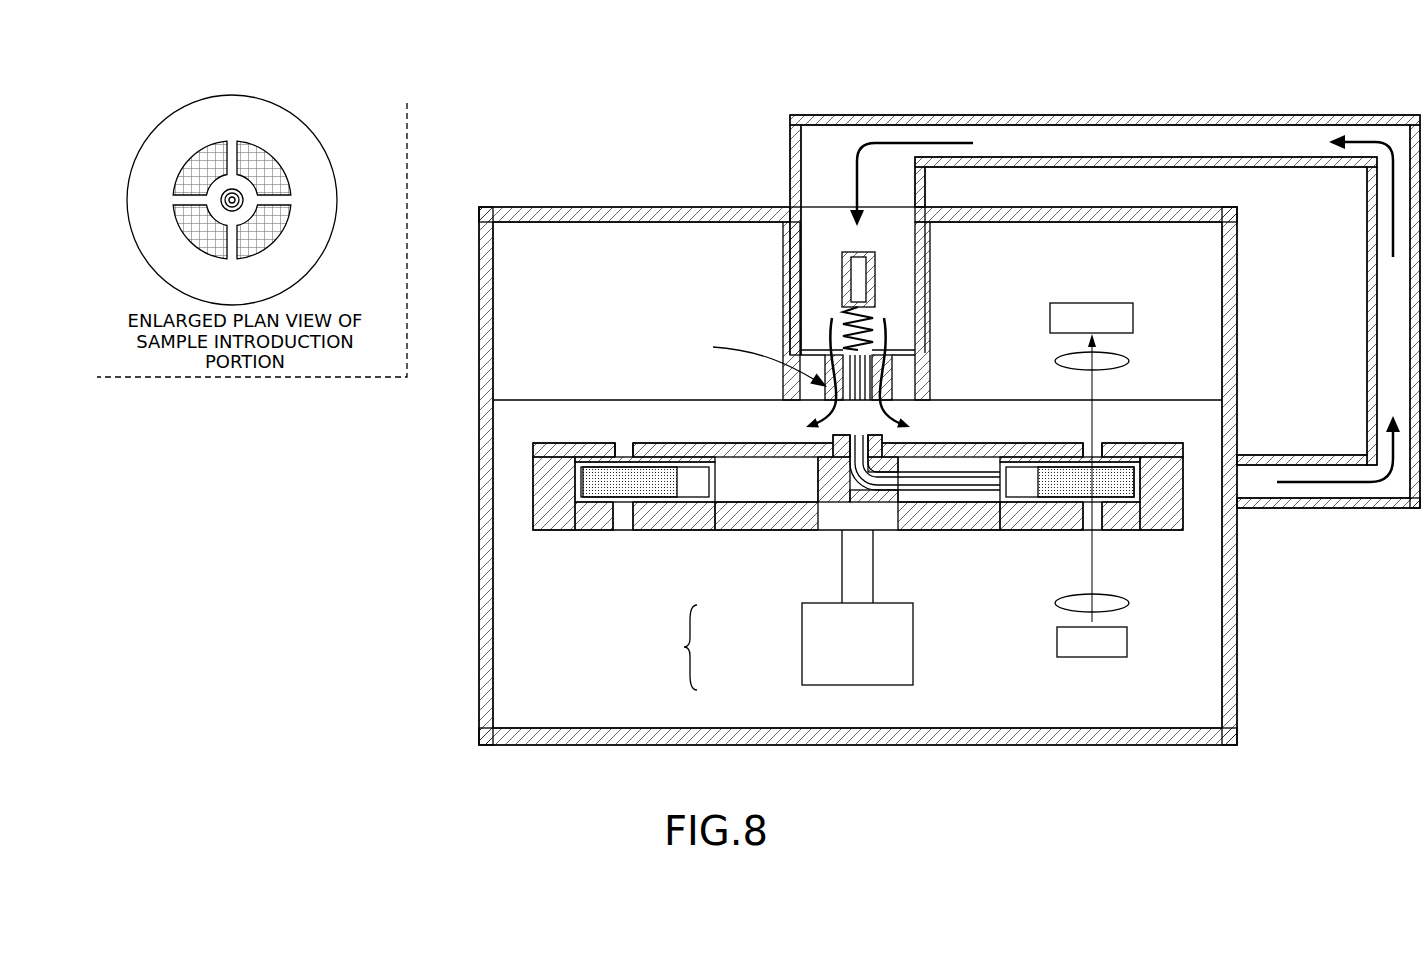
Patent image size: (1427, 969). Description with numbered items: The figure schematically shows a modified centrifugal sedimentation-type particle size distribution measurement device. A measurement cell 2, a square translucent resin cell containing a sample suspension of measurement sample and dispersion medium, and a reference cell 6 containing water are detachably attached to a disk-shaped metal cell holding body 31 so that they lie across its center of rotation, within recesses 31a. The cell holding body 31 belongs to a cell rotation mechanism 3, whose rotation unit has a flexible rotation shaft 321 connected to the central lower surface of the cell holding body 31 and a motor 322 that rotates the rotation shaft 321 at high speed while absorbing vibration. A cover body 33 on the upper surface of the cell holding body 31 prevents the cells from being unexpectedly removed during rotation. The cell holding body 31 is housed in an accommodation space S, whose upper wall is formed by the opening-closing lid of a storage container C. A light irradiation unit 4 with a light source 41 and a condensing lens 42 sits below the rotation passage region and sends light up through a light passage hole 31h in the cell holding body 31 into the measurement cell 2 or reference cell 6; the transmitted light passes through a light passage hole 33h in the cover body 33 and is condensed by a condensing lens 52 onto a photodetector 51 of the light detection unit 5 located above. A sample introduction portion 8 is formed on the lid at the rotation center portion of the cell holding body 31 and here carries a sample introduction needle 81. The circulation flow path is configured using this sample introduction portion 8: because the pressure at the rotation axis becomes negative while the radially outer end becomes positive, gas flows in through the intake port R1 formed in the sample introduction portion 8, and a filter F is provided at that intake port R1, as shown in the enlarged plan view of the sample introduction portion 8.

The storage container C is at (478, 562).
The accommodation space S is at (614, 275).
The sample introduction portion 8 is at (783, 254).
The sample introduction needle 81 is at (875, 270).
The filter F is at (822, 355).
The intake port R1 is at (751, 359).
The light detection unit 5 is at (1041, 458).
The photodetector 51 is at (1050, 318).
The condensing lens 52 is at (1059, 355).
The light irradiation unit 4 is at (1042, 632).
The light source 41 is at (1061, 645).
The condensing lens 42 is at (1057, 604).
The cell rotation mechanism 3 is at (805, 548).
The cover body 33 is at (563, 443).
The light passage hole 33h is at (621, 438).
The cell holding body 31 is at (533, 490).
The accommodating recess 31a is at (743, 472).
The light passage hole 31h is at (621, 531).
The reference cell 6 is at (715, 490).
The measurement cell 2 is at (1000, 492).
The rotation shaft 321 is at (835, 555).
The motor 322 is at (802, 645).